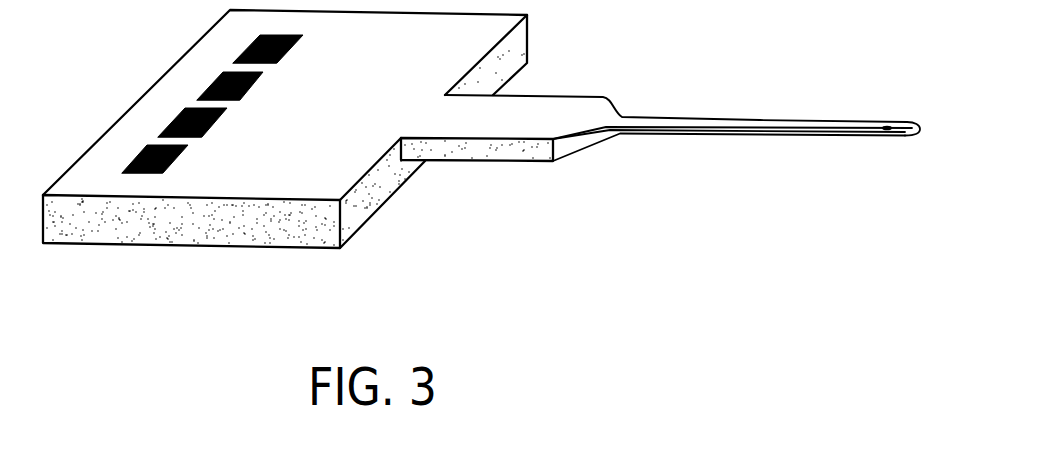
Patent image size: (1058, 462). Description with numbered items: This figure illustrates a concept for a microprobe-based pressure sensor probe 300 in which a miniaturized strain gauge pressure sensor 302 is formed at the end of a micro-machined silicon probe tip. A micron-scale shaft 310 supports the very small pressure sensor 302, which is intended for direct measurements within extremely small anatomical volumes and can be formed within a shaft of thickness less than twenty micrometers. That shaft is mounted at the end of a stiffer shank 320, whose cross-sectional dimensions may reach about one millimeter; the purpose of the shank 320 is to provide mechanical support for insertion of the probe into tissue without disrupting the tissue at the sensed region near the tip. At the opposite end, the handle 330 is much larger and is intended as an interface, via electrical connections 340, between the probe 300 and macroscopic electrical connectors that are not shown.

The microprobe-based pressure sensor probe 300 is at (683, 202).
The pressure sensor 302 is at (887, 124).
The micron-scale shaft 310 is at (680, 123).
The shank 320 is at (497, 155).
The handle 330 is at (212, 237).
The electrical connections 340 is at (247, 43).